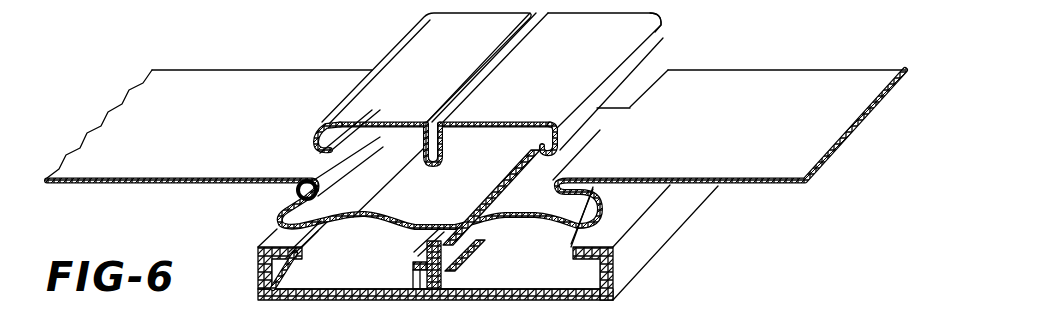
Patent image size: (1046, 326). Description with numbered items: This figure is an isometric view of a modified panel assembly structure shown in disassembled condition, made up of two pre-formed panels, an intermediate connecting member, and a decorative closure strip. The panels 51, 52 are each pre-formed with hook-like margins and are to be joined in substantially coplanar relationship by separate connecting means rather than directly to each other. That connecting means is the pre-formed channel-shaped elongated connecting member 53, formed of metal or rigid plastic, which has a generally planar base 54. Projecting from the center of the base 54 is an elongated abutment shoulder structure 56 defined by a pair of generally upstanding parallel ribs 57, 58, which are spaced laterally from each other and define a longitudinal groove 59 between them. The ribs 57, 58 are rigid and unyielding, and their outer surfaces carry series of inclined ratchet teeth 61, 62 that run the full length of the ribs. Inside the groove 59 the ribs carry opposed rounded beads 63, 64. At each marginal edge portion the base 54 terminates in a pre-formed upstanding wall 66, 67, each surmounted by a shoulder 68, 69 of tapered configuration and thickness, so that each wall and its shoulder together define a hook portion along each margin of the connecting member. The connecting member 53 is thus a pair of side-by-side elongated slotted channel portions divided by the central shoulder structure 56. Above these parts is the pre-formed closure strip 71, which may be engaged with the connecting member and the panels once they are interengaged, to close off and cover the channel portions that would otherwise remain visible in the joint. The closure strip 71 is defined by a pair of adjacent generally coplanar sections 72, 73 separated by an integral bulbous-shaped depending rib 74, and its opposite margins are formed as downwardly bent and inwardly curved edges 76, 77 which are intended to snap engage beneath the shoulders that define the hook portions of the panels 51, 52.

The panel 51 is at (476, 148).
The panel 52 is at (729, 157).
The connecting member 53 is at (258, 301).
The base 54 is at (353, 282).
The abutment shoulder structure 56 is at (425, 289).
The rib 57 is at (434, 290).
The rib 58 is at (448, 290).
The longitudinal groove 59 is at (432, 250).
The ratchet teeth 61 is at (408, 278).
The ratchet teeth 62 is at (462, 262).
The rounded bead 63 is at (425, 267).
The rounded bead 64 is at (456, 270).
The upstanding wall 66 is at (265, 275).
The upstanding wall 67 is at (628, 301).
The shoulder 68 is at (296, 258).
The shoulder 69 is at (586, 256).
The closure strip 71 is at (665, 20).
The section 72 is at (435, 70).
The section 73 is at (551, 81).
The depending rib 74 is at (427, 160).
The edge 76 is at (322, 130).
The edge 77 is at (545, 140).